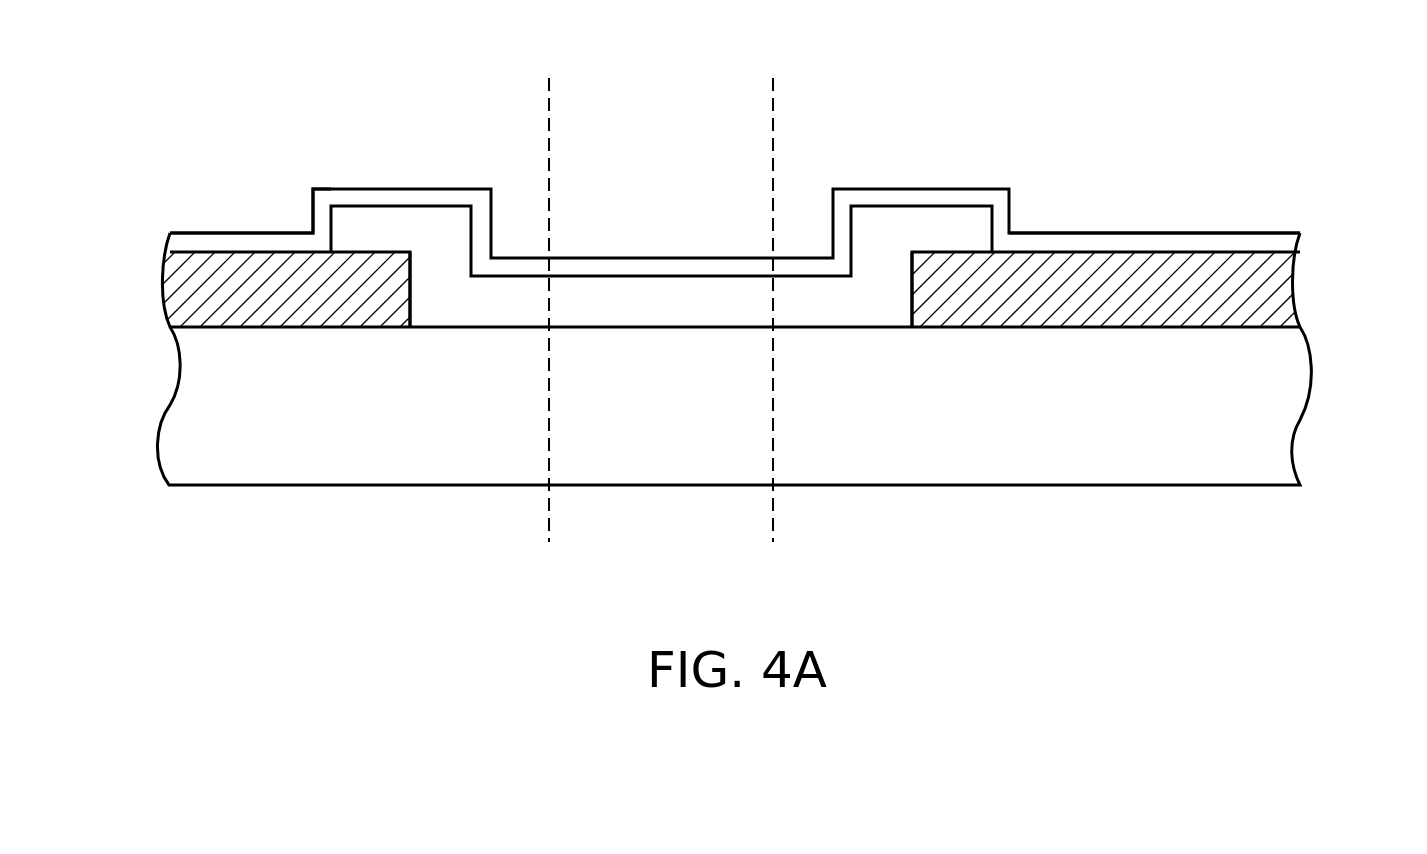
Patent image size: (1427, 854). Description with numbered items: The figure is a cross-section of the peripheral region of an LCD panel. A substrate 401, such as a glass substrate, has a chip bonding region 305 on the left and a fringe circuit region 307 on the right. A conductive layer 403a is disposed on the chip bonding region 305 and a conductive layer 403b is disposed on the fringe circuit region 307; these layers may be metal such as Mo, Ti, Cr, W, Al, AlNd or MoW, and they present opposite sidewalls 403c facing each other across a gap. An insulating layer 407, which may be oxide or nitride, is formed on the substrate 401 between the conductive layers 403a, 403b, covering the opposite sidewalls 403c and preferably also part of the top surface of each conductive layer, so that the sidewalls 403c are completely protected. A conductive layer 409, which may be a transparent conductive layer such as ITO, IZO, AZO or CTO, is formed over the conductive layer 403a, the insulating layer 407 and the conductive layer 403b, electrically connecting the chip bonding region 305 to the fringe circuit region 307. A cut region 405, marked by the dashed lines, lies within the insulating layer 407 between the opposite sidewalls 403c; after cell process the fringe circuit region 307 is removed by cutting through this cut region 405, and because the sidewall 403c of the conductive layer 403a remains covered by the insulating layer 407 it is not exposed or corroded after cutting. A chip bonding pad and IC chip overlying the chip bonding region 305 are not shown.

The chip bonding region 305 is at (282, 207).
The fringe circuit region 307 is at (1057, 207).
The substrate 401 is at (1280, 412).
The conductive layer 403a is at (192, 288).
The conductive layer 403b is at (1280, 290).
The opposite sidewalls 403c is at (410, 287).
The cut region 405 is at (548, 57).
The insulating layer 407 is at (942, 230).
The conductive layer 409 is at (1280, 243).